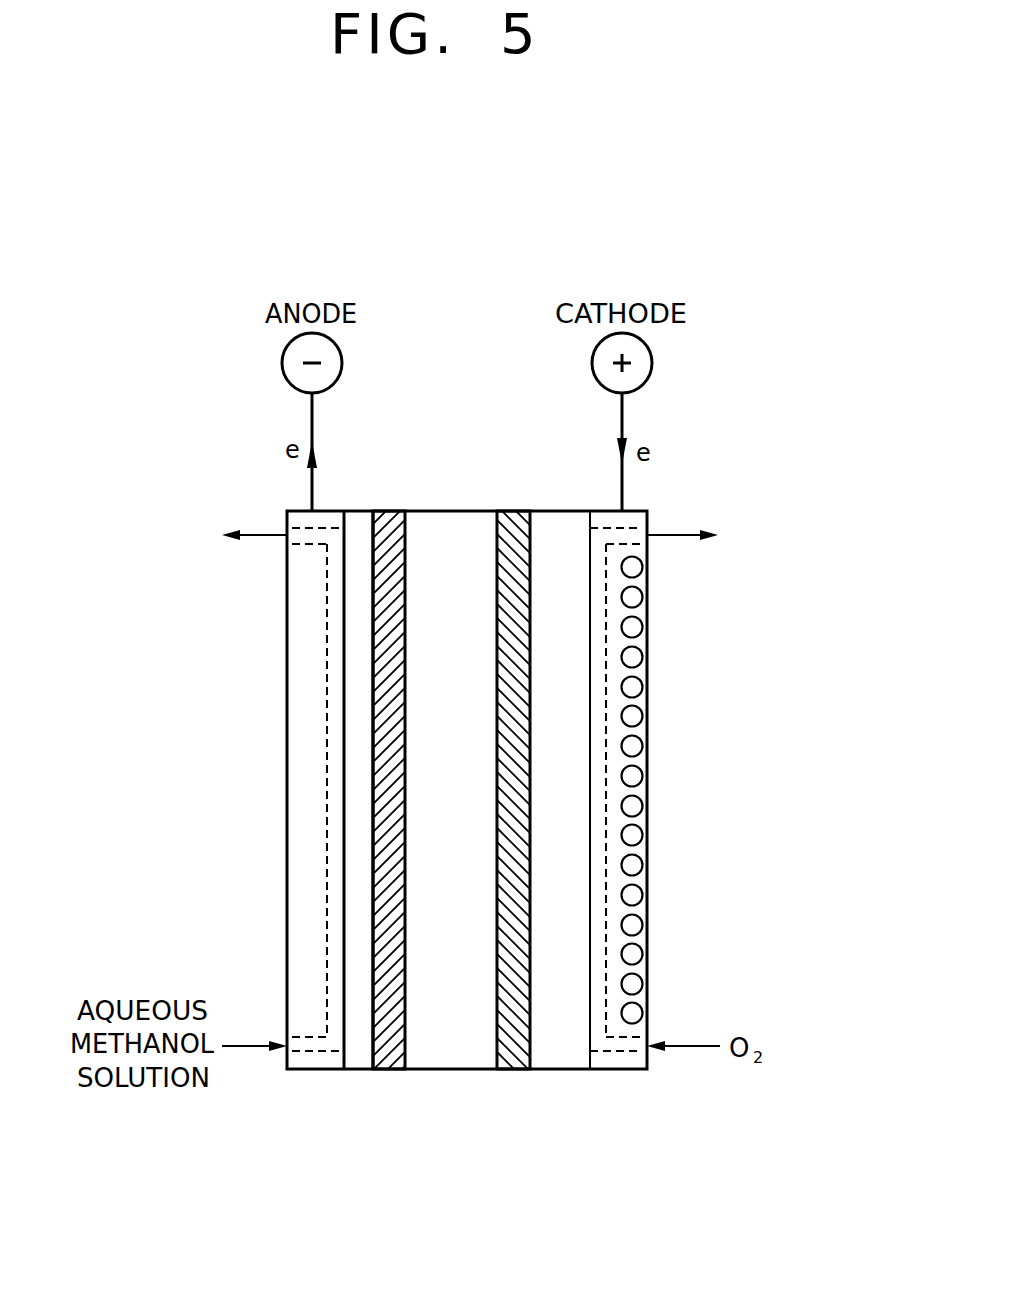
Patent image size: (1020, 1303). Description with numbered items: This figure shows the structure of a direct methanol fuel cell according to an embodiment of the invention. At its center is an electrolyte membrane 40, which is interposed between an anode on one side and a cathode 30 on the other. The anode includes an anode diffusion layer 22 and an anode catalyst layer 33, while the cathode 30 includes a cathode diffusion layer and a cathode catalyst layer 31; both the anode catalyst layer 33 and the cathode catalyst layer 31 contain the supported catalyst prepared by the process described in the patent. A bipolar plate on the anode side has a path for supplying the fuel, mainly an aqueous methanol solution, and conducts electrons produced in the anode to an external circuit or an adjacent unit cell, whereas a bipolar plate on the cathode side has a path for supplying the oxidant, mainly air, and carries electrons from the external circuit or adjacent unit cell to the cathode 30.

The anode diffusion layer 22 is at (355, 655).
The cathode 30 is at (560, 506).
The cathode catalyst layer 31 is at (518, 1063).
The anode catalyst layer 33 is at (388, 1063).
The electrolyte membrane 40 is at (458, 1061).